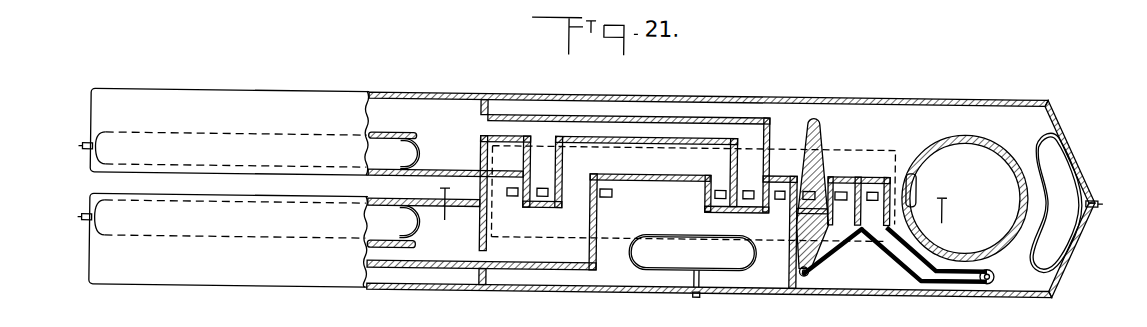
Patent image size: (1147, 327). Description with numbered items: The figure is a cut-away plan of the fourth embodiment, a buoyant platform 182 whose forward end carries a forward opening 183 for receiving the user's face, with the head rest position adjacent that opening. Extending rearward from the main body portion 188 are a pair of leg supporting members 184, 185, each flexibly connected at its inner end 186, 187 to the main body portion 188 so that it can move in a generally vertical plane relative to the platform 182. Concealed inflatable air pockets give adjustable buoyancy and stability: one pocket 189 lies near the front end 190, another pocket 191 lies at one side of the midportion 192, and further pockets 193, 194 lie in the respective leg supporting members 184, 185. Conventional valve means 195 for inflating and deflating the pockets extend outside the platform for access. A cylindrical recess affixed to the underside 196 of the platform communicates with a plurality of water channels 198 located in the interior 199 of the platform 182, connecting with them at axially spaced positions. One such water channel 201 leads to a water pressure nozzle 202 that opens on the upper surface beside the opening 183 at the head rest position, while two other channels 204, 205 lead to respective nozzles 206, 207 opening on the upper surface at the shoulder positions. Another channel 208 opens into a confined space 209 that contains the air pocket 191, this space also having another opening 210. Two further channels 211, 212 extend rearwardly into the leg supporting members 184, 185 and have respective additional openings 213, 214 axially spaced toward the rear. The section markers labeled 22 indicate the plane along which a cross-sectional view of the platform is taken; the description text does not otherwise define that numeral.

The section line 22 is at (691, 203).
The buoyant platform 182 is at (918, 100).
The forward opening 183 is at (966, 145).
The leg supporting member 184 is at (207, 95).
The leg supporting member 185 is at (230, 288).
The inner end 186 is at (482, 100).
The inner end 187 is at (488, 282).
The main body portion 188 is at (586, 117).
The air pocket 189 is at (1067, 226).
The front end 190 is at (1067, 272).
The air pocket 191 is at (662, 257).
The midportion 192 is at (733, 288).
The air pocket 193 is at (277, 137).
The air pocket 194 is at (292, 241).
The valve means 195 is at (82, 152).
The underside 196 is at (118, 312).
The water channels 198 is at (434, 147).
The interior 199 is at (692, 105).
The water channel 201 is at (915, 260).
The water pressure nozzle 202 is at (1012, 288).
The channel 204 is at (815, 140).
The channel 205 is at (818, 268).
The nozzle 206 is at (813, 117).
The nozzle 207 is at (806, 273).
The channel 208 is at (787, 173).
The confined space 209 is at (610, 270).
The opening 210 is at (612, 193).
The channel 211 is at (614, 126).
The channel 212 is at (642, 139).
The opening 213 is at (548, 189).
The opening 214 is at (510, 198).